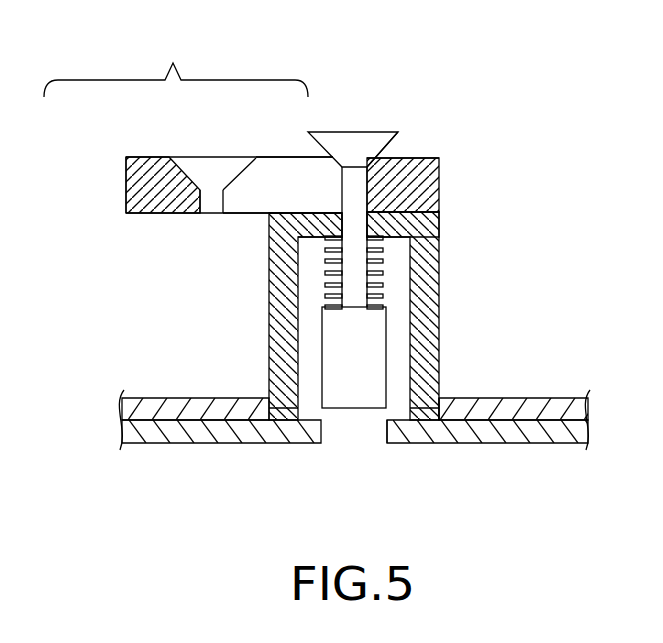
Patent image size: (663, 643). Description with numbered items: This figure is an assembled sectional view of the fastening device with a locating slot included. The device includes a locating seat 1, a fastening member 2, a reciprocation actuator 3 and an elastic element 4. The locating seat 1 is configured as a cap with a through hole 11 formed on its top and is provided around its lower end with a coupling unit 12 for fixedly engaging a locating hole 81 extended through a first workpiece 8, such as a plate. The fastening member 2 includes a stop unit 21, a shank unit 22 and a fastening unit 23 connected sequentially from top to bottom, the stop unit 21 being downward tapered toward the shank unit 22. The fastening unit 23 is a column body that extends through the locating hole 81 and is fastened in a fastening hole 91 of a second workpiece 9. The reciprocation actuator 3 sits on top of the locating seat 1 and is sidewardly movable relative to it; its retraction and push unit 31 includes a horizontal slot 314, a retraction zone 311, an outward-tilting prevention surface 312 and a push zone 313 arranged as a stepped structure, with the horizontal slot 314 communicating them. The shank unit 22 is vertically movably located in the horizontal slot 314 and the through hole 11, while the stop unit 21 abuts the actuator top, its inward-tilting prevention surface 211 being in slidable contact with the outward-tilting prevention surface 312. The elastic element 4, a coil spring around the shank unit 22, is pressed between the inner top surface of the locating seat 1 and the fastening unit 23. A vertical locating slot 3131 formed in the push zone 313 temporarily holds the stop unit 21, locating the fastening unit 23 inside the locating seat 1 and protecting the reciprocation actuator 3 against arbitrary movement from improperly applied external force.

The locating seat 1 is at (414, 299).
The through hole 11 is at (370, 221).
The coupling unit 12 is at (287, 403).
The fastening member 2 is at (415, 226).
The stop unit 21 is at (350, 140).
The inward-tilting prevention surface 211 is at (393, 143).
The shank unit 22 is at (353, 191).
The fastening unit 23 is at (370, 352).
The reciprocation actuator 3 is at (185, 118).
The retraction and push unit 31 is at (176, 60).
The retraction zone 311 is at (203, 180).
The outward-tilting prevention surface 312 is at (233, 180).
The push zone 313 is at (313, 150).
The locating slot 3131 is at (392, 175).
The horizontal slot 314 is at (280, 185).
The elastic element 4 is at (373, 283).
The first workpiece 8 is at (355, 410).
The locating hole 81 is at (413, 407).
The second workpiece 9 is at (355, 465).
The fastening hole 91 is at (389, 432).